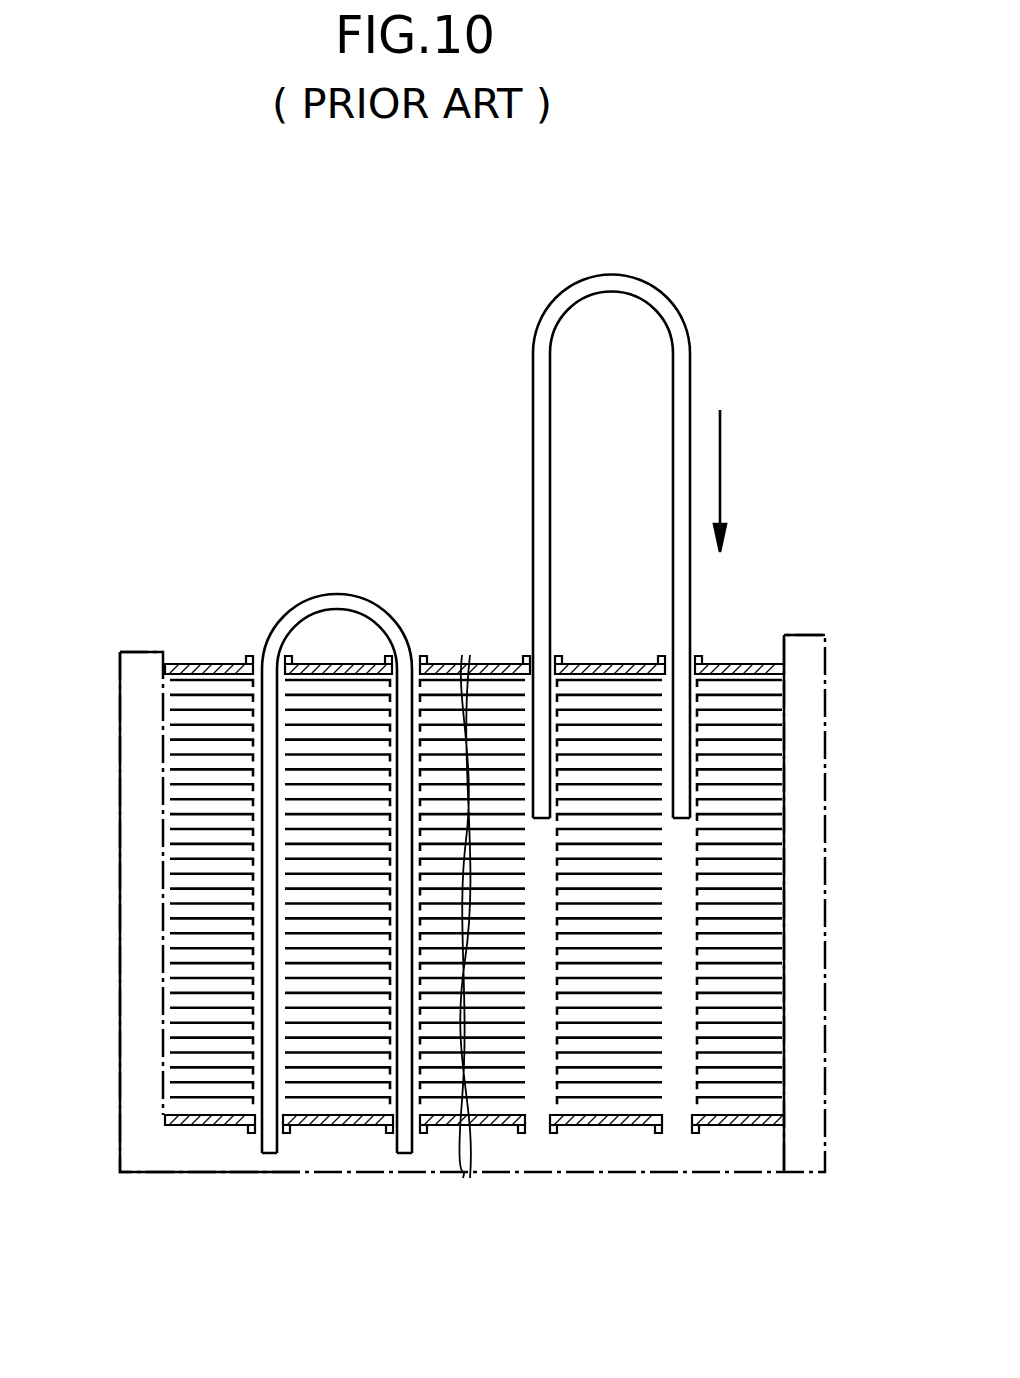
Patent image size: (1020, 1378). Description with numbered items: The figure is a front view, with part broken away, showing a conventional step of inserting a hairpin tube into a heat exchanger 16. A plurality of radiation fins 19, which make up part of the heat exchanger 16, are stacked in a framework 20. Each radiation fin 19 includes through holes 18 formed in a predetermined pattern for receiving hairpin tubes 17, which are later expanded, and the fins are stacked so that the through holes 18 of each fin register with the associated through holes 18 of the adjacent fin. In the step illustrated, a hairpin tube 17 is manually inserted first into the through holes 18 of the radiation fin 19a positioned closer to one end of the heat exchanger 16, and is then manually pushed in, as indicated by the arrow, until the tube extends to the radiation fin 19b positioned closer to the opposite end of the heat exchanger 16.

The heat exchanger 16 is at (730, 656).
The hairpin tube 17 is at (366, 598).
The through hole 18 is at (256, 660).
The radiation fin 19 is at (178, 813).
The radiation fin positioned closer to one end 19a is at (195, 662).
The radiation fin positioned closer to the opposite end 19b is at (197, 1128).
The framework 20 is at (828, 962).